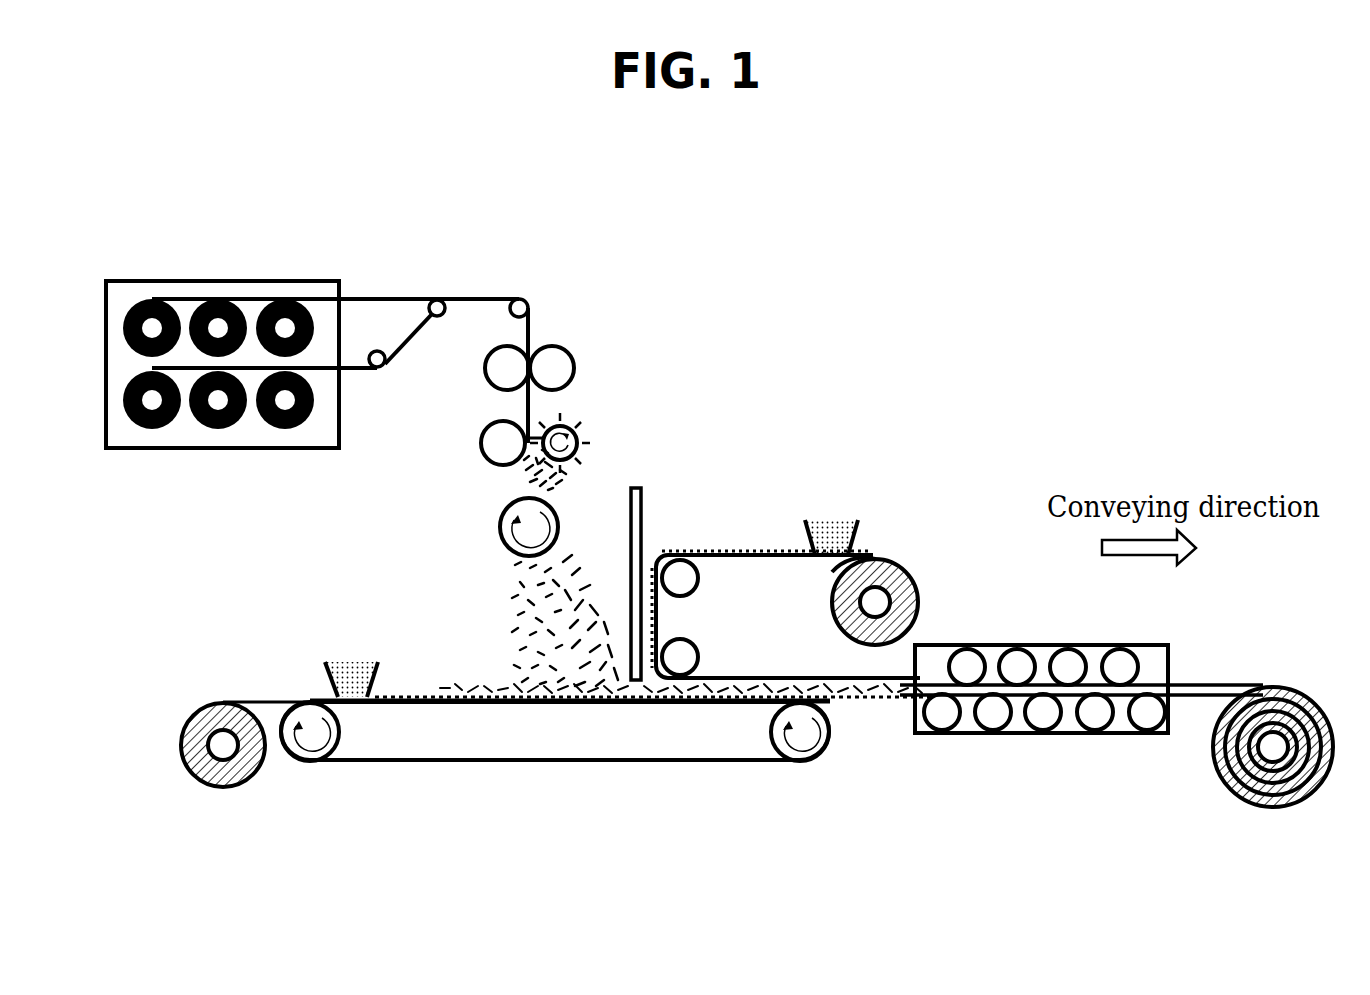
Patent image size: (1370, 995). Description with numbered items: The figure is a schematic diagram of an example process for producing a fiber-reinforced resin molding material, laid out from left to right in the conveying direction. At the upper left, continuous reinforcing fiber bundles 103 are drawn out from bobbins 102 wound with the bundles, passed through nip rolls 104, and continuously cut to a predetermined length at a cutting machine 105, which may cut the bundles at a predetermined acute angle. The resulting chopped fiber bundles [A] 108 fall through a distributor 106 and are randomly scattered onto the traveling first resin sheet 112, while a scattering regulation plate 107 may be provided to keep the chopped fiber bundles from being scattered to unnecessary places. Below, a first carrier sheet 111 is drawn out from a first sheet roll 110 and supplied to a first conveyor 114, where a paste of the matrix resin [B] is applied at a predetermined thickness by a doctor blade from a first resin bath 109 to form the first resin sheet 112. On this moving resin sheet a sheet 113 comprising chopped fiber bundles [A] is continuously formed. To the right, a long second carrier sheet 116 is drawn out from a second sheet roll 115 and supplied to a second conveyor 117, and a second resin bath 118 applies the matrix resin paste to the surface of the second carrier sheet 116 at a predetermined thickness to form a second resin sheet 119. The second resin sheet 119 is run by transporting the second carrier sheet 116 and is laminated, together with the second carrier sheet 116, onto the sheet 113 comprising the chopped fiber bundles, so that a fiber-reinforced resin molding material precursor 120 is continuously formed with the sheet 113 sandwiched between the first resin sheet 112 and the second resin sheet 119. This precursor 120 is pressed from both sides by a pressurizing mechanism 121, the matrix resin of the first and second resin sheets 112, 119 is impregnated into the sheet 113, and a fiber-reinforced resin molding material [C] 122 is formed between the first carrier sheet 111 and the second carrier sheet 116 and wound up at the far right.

The bobbins 102 is at (308, 310).
The continuous reinforcing fiber bundles 103 is at (412, 292).
The nip rolls 104 is at (595, 355).
The cutting machine 105 is at (603, 415).
The distributor 106 is at (487, 534).
The scattering regulation plate 107 is at (655, 490).
The chopped fiber bundles [A] 108 is at (513, 483).
The first resin bath 109 is at (343, 655).
The first sheet roll 110 is at (218, 705).
The first carrier sheet 111 is at (303, 687).
The first resin sheet 112 is at (409, 687).
The sheet comprising chopped fiber bundles [A] 113 is at (577, 708).
The first conveyor 114 is at (487, 737).
The second sheet roll 115 is at (925, 590).
The second carrier sheet 116 is at (860, 545).
The second conveyor 117 is at (708, 645).
The second resin bath 118 is at (832, 530).
The second resin sheet 119 is at (725, 537).
The fiber-reinforced resin molding material precursor 120 is at (848, 703).
The pressurizing mechanism 121 is at (1020, 748).
The fiber-reinforced resin molding material [C] 122 is at (1238, 768).